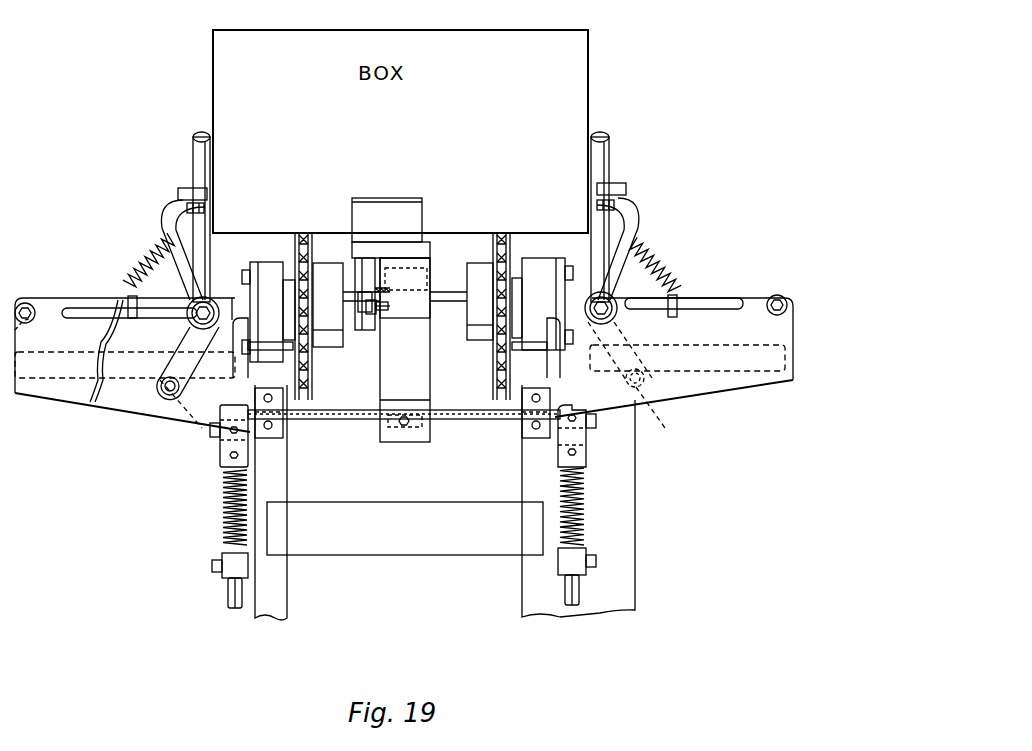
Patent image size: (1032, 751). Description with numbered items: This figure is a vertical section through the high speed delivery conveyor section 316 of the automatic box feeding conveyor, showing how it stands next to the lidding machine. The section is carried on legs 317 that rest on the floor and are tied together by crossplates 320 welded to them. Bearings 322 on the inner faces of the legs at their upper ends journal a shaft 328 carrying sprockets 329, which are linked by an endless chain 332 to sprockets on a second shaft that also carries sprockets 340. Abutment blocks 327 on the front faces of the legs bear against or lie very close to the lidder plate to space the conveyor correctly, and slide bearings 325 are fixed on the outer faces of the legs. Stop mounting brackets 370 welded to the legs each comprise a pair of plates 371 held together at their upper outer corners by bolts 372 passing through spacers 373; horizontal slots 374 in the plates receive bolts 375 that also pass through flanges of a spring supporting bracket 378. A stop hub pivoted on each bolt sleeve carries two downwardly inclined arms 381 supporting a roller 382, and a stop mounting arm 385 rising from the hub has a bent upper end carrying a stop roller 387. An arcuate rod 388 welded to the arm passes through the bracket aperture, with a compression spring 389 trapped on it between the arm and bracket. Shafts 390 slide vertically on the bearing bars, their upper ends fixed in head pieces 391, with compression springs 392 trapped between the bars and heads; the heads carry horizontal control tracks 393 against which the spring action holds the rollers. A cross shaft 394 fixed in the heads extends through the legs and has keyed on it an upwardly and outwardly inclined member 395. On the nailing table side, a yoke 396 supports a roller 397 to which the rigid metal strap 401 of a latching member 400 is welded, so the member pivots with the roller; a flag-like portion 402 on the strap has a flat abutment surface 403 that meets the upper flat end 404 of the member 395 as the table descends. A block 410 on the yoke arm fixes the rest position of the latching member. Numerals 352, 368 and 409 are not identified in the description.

The high speed delivery conveyor section 316 is at (308, 240).
The legs 317 is at (275, 608).
The crossplates 320 is at (414, 539).
The bearings 322 is at (266, 268).
The slide bearings 325 is at (570, 563).
The abutment blocks 327 is at (288, 438).
The shaft 328 is at (447, 290).
The sprockets 329 is at (328, 275).
The endless chain 332 is at (312, 385).
The sprockets 340 is at (270, 343).
The guide post 352 is at (201, 133).
The nut 368 is at (205, 208).
The stop mounting brackets 370 is at (55, 385).
The plates 371 is at (100, 402).
The bolts 372 is at (28, 302).
The spacers 373 is at (30, 322).
The horizontal slots 374 is at (80, 318).
The bolts 375 is at (205, 306).
The spring supporting bracket 378 is at (186, 312).
The arms 381 is at (185, 380).
The roller 382 is at (165, 378).
The stop mounting arm 385 is at (168, 224).
The stop roller 387 is at (185, 193).
The arcuate rod 388 is at (128, 300).
The compression spring 389 is at (153, 258).
The shafts 390 is at (236, 592).
The head pieces 391 is at (588, 450).
The compression springs 392 is at (586, 495).
The control tracks 393 is at (148, 371).
The cross shaft 394 is at (468, 422).
The member 395 is at (422, 381).
The yoke 396 is at (388, 318).
The roller 397 is at (380, 250).
The latching member 400 is at (372, 198).
The rigid metal strap 401 is at (360, 275).
The flag-like portion 402 is at (412, 218).
The flat abutment surface 403 is at (395, 262).
The upper flat end 404 is at (430, 262).
The clip 409 is at (388, 306).
The block 410 is at (388, 295).